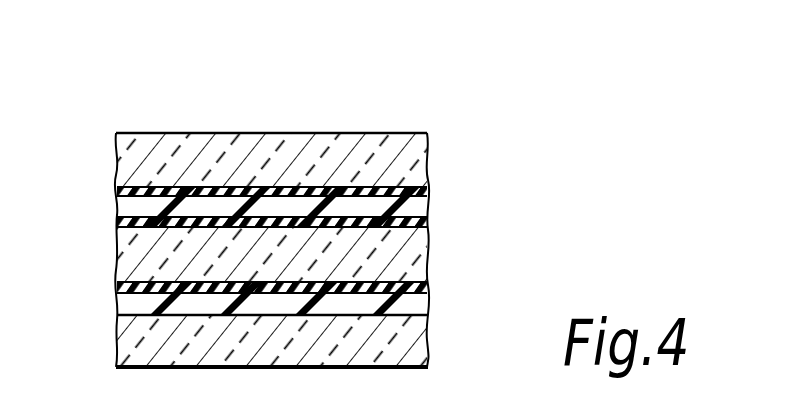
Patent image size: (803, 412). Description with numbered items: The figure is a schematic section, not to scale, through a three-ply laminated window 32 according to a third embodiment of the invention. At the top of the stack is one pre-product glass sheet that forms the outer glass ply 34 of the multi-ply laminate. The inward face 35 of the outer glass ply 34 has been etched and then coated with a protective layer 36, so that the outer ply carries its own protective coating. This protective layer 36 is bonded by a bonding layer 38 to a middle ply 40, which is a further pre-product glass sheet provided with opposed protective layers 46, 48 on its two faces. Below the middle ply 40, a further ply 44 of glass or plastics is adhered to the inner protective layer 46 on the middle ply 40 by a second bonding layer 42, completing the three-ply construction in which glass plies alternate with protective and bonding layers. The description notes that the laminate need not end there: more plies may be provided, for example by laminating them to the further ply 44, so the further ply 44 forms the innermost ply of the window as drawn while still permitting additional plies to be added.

The three-ply laminated window 32 is at (492, 184).
The outer glass ply 34 is at (388, 149).
The inward face 35 is at (412, 190).
The protective layer 36 is at (272, 152).
The bonding layer 38 is at (229, 203).
The middle ply 40 is at (413, 262).
The bonding layer 42 is at (407, 307).
The further ply 44 is at (131, 342).
The inner protective layer 46 is at (133, 218).
The protective layer 48 is at (127, 306).